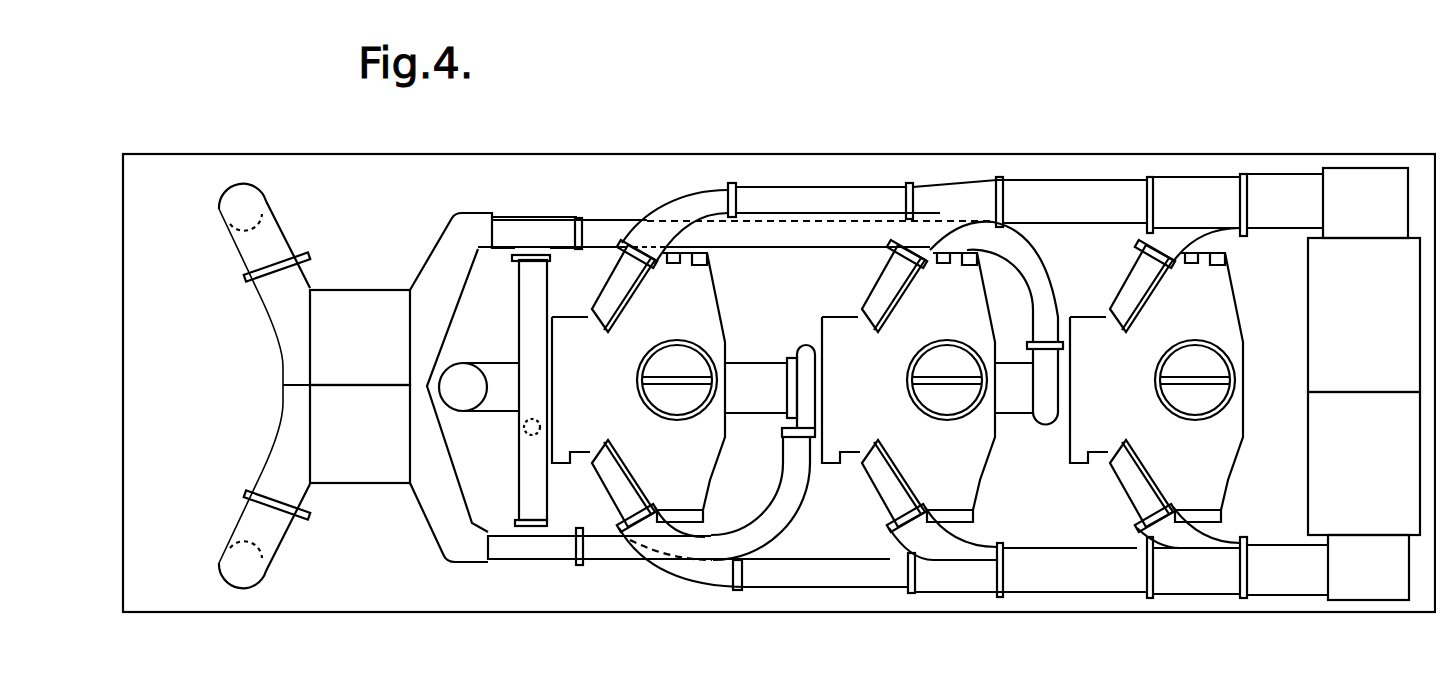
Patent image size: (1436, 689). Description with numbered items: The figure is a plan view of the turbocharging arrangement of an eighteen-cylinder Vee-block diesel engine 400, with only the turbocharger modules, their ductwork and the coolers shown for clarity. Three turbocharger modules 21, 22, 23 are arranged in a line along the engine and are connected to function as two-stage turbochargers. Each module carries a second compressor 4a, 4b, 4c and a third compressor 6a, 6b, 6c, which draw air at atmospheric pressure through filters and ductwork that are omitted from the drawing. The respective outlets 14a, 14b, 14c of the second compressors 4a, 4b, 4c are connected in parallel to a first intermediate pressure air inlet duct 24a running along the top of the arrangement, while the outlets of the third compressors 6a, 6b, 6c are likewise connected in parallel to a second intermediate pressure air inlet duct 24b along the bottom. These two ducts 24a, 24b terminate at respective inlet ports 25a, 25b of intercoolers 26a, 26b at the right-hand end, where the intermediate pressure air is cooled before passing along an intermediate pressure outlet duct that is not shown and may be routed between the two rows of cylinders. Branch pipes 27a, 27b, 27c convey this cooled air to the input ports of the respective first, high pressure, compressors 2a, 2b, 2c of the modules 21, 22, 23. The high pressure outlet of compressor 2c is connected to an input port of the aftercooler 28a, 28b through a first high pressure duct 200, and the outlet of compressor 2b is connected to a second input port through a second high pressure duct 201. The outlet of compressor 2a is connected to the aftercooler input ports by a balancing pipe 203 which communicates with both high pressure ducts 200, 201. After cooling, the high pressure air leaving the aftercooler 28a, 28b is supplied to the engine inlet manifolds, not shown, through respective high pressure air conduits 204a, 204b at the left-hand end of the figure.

The engine 400 is at (757, 98).
The high pressure air conduit 204a is at (240, 253).
The high pressure air conduit 204b is at (245, 520).
The aftercooler 28a is at (380, 344).
The aftercooler 28b is at (380, 449).
The balancing pipe 203 is at (527, 495).
The branch pipe 27a is at (520, 445).
The first high pressure compressor 2a is at (517, 363).
The turbocharger module 21 is at (610, 400).
The turbocharger module 22 is at (880, 400).
The turbocharger module 23 is at (1128, 400).
The second compressor 4a is at (617, 277).
The second compressor 4b is at (886, 288).
The second compressor 4c is at (1130, 284).
The third compressor 6a is at (613, 513).
The third compressor 6b is at (893, 528).
The third compressor 6c is at (1130, 520).
The outlet of second compressor 14a is at (627, 248).
The outlet of second compressor 14b is at (905, 255).
The outlet of second compressor 14c is at (1137, 252).
The first high pressure duct 200 is at (778, 230).
The second high pressure duct 201 is at (777, 570).
The branch pipe 27b is at (753, 378).
The branch pipe 27c is at (1017, 382).
The first high pressure compressor 2b is at (800, 372).
The first high pressure compressor 2c is at (1048, 430).
The first intermediate pressure air inlet duct 24a is at (1225, 187).
The second intermediate pressure air inlet duct 24b is at (1227, 575).
The inlet port 25a is at (1368, 182).
The inlet port 25b is at (1380, 575).
The intercooler 26a is at (1385, 332).
The intercooler 26b is at (1385, 469).